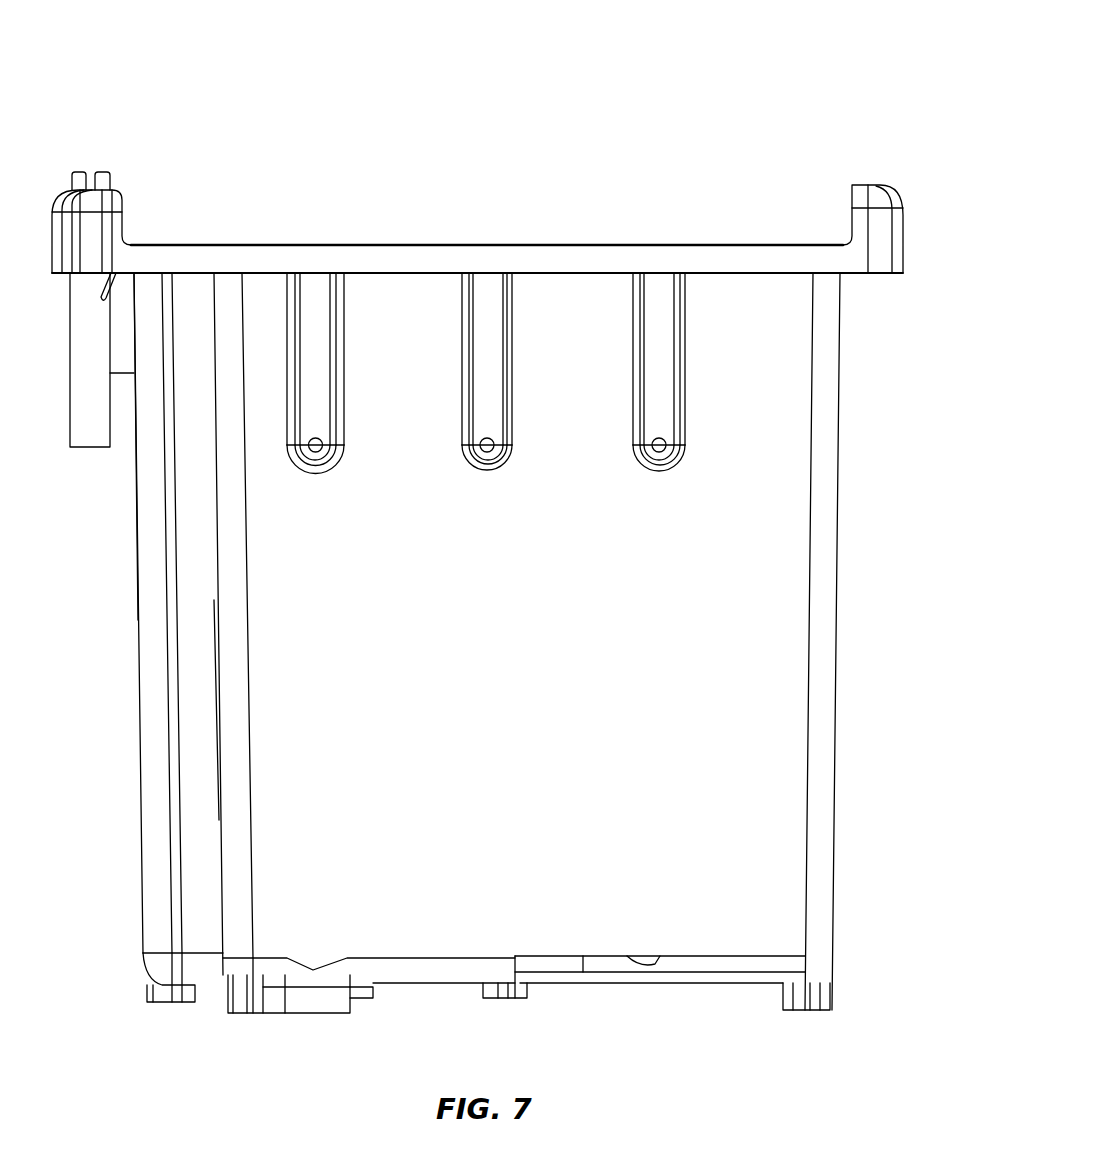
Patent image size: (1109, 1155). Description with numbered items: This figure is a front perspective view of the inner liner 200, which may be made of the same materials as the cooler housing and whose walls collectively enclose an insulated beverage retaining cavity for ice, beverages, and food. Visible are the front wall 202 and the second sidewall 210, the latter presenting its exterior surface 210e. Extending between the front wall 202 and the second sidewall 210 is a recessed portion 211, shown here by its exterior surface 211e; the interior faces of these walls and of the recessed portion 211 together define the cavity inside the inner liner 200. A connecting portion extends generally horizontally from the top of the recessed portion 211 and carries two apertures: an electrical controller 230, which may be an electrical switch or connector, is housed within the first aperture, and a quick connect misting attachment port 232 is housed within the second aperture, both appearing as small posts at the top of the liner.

The inner liner 200 is at (662, 92).
The front wall 202 is at (762, 645).
The second sidewall 210 is at (136, 679).
The exterior surface of second sidewall 210e is at (136, 560).
The recessed portion 211 is at (220, 838).
The exterior surface of recessed portion 211e is at (196, 760).
The electrical controller 230 is at (108, 170).
The quick connect misting attachment port 232 is at (73, 172).